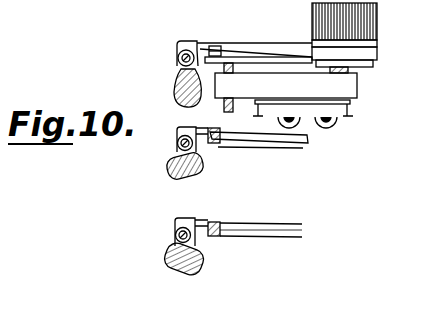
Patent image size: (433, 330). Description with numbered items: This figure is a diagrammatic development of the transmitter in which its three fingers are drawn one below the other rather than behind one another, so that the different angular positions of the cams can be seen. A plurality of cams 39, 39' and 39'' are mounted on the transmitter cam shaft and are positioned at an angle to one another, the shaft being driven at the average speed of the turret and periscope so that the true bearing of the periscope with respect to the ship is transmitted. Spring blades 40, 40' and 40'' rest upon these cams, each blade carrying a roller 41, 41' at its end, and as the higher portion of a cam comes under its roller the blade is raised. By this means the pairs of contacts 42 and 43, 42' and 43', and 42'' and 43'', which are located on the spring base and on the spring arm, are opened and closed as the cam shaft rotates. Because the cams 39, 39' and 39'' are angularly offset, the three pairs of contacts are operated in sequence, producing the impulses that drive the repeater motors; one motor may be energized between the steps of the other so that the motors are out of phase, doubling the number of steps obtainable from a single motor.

The cam 39 is at (171, 88).
The roller 41 is at (165, 142).
The contact 43 is at (217, 65).
The contact 42 is at (258, 41).
The spring blade 40 is at (287, 65).
The roller 41' is at (175, 145).
The cam 39' is at (171, 169).
The contact 43' is at (208, 126).
The contact 42' is at (260, 158).
The spring blade 40' is at (273, 147).
The cam 39'' is at (174, 268).
The contact 43'' is at (222, 214).
The contact 42'' is at (260, 248).
The spring blade 40'' is at (270, 220).